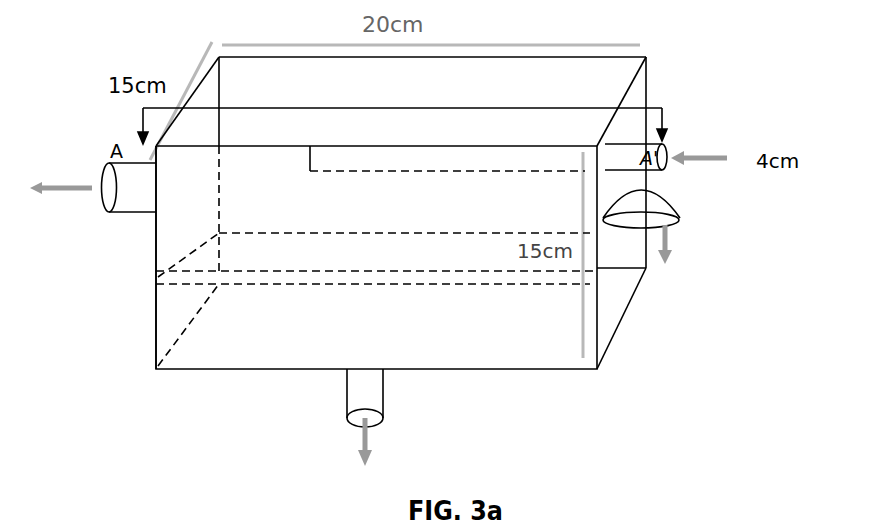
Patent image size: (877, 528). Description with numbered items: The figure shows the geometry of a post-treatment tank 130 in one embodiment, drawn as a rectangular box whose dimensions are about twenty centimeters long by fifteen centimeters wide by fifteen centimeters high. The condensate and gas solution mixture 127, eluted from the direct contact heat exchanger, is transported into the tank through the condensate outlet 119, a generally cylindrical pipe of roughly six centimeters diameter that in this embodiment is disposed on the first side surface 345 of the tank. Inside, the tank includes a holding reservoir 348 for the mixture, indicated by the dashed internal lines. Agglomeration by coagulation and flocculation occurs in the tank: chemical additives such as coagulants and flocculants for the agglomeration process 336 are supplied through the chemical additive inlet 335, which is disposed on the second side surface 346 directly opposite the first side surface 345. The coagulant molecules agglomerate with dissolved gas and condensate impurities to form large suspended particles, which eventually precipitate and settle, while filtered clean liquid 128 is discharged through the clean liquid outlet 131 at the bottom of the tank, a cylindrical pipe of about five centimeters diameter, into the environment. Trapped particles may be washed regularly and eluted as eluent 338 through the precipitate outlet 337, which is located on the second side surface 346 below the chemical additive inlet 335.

The post-treatment tank 130 is at (697, 92).
The condensate outlet 119 is at (132, 202).
The condensate and gas solution mixture 127 is at (65, 197).
The clean liquid outlet 131 is at (372, 388).
The clean liquid 128 is at (375, 438).
The chemical additive inlet 335 is at (668, 150).
The agglomeration process 336 is at (732, 156).
The precipitate outlet 337 is at (677, 212).
The eluent 338 is at (675, 256).
The first side surface 345 is at (152, 308).
The second side surface 346 is at (617, 293).
The holding reservoir 348 is at (167, 255).